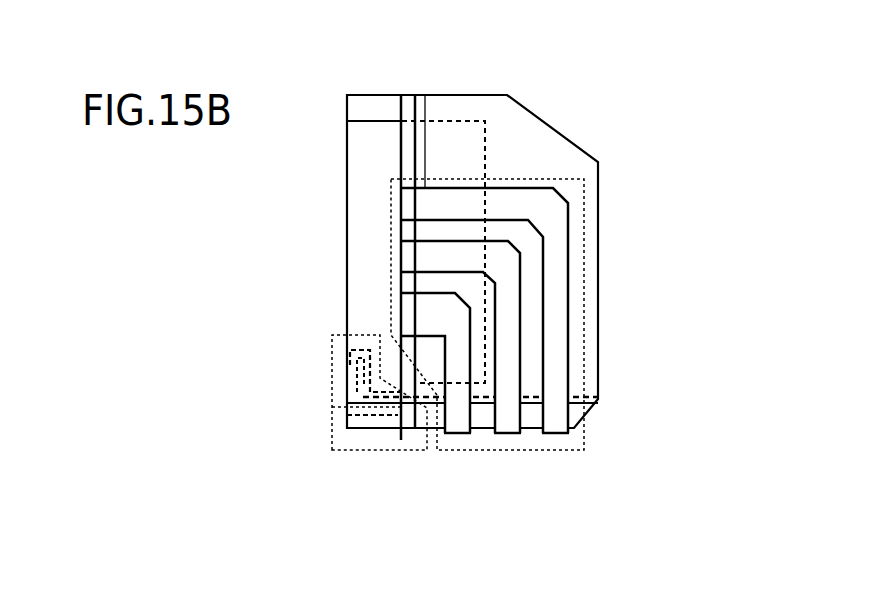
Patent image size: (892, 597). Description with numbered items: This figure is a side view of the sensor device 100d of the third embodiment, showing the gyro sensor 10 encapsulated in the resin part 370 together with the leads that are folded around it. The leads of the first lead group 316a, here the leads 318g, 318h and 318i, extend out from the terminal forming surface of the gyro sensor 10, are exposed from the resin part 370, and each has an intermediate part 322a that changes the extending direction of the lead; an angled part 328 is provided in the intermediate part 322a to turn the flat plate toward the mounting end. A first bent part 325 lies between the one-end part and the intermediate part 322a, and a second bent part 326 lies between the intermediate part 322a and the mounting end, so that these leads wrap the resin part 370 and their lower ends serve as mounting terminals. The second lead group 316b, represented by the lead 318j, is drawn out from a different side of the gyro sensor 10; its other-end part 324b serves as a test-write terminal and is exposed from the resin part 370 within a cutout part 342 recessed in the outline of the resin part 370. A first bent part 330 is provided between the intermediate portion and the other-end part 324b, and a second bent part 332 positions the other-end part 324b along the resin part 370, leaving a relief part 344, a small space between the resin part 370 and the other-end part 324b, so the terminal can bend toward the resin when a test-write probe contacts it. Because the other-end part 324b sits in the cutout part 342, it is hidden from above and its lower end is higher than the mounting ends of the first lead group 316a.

The sensor device 100d is at (459, 68).
The resin part 370 is at (440, 97).
The first bent part 325 is at (408, 205).
The gyro sensor 10 is at (487, 130).
The intermediate part 322a is at (465, 205).
The angled part 328 is at (563, 200).
The first lead group 316a is at (587, 205).
The lead 318g is at (578, 243).
The lead 318h is at (526, 355).
The lead 318i is at (453, 355).
The cutout part 342 is at (350, 372).
The relief part 344 is at (366, 395).
The second bent part 332 is at (347, 416).
The lead 318j is at (345, 438).
The other-end part 324b is at (380, 415).
The second lead group 316b is at (353, 430).
The first bent part 330 is at (407, 410).
The second bent part 326 is at (460, 433).